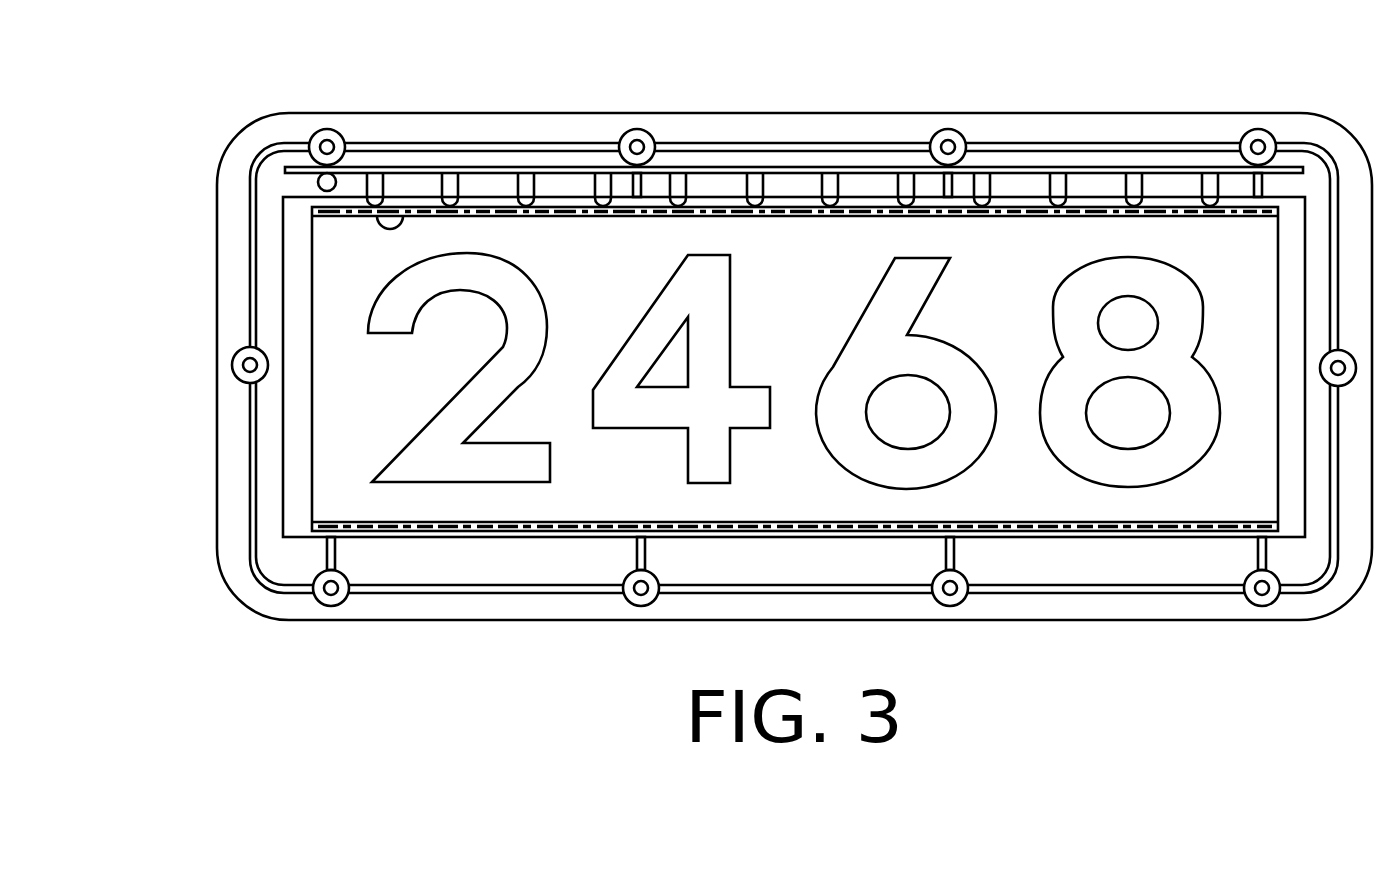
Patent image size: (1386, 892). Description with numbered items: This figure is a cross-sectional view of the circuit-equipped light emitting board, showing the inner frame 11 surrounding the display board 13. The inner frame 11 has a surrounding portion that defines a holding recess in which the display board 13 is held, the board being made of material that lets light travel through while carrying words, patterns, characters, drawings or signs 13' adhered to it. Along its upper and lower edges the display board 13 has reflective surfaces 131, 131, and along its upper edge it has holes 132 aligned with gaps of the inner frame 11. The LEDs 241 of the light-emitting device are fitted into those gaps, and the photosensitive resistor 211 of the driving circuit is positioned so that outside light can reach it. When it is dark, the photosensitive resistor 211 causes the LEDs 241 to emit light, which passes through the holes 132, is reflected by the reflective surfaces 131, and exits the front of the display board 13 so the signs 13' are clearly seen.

The inner frame 11 is at (780, 128).
The display board 13 is at (731, 410).
The words, patterns, characters, drawings or signs 13' is at (712, 369).
The reflective surfaces 131 is at (347, 217).
The holes 132 is at (405, 213).
The photosensitive resistor 211 is at (298, 177).
The LEDs 241 is at (450, 187).